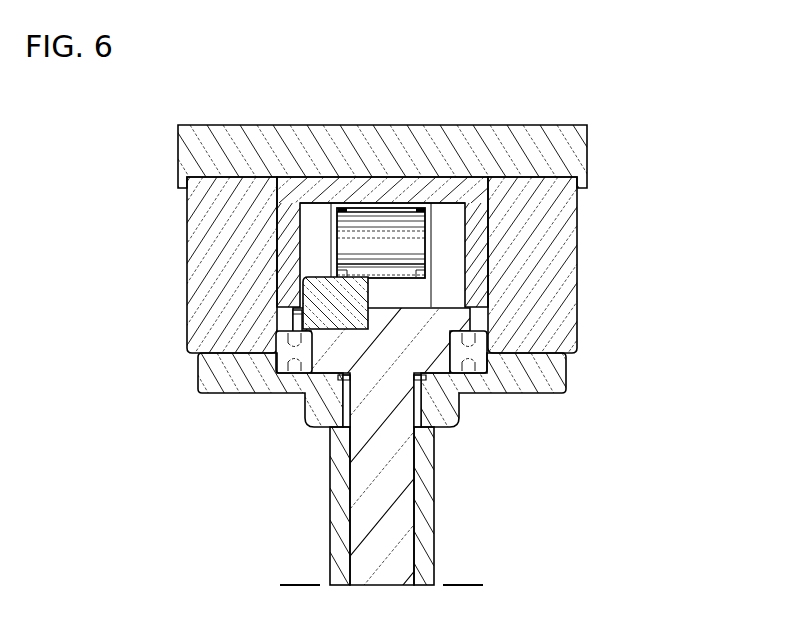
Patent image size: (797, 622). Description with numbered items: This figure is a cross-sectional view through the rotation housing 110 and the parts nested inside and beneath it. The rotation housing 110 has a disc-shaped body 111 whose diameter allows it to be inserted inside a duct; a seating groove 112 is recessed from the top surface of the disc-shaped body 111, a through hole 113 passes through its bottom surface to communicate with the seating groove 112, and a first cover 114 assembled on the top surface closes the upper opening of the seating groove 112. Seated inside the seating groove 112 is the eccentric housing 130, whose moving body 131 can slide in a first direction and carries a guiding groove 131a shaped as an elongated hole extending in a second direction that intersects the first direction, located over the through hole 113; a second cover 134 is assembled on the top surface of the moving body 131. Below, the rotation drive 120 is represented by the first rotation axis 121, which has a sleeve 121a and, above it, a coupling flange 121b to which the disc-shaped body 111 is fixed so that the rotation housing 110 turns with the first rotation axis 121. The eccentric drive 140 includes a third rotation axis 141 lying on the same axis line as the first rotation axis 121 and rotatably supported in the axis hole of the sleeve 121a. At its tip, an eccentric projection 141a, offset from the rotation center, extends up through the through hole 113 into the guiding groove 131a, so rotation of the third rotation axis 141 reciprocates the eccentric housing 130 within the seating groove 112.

The rotation housing 110 is at (392, 373).
The disc-shaped body 111 is at (566, 318).
The seating groove 112 is at (487, 222).
The through hole 113 is at (485, 353).
The first cover 114 is at (556, 153).
The sleeve assembly 120 is at (453, 486).
The first rotation axis 121 is at (453, 486).
The sleeve 121a is at (507, 380).
The coupling flange 121b is at (427, 521).
The eccentric housing 130 is at (246, 377).
The moving body 131 is at (285, 238).
The guiding groove 131a is at (300, 298).
The second cover 134 is at (287, 190).
The eccentric drive 140 is at (272, 377).
The third rotation axis 141 is at (372, 497).
The eccentric projection 141a is at (292, 315).